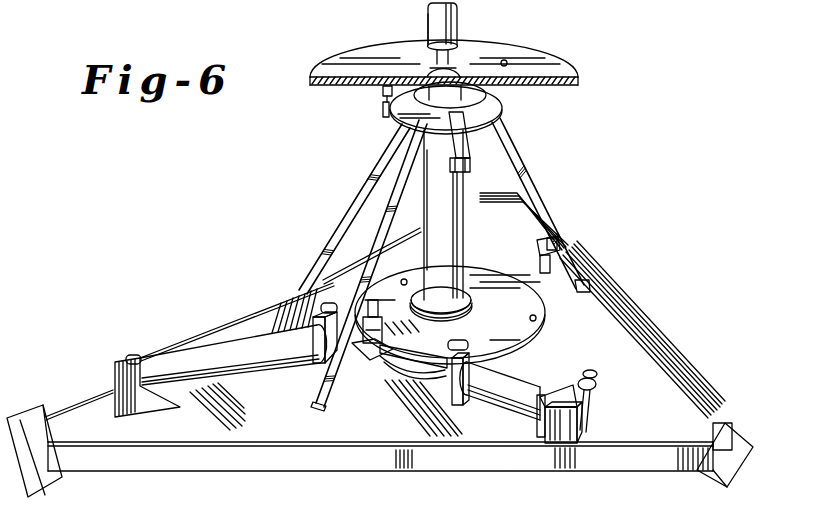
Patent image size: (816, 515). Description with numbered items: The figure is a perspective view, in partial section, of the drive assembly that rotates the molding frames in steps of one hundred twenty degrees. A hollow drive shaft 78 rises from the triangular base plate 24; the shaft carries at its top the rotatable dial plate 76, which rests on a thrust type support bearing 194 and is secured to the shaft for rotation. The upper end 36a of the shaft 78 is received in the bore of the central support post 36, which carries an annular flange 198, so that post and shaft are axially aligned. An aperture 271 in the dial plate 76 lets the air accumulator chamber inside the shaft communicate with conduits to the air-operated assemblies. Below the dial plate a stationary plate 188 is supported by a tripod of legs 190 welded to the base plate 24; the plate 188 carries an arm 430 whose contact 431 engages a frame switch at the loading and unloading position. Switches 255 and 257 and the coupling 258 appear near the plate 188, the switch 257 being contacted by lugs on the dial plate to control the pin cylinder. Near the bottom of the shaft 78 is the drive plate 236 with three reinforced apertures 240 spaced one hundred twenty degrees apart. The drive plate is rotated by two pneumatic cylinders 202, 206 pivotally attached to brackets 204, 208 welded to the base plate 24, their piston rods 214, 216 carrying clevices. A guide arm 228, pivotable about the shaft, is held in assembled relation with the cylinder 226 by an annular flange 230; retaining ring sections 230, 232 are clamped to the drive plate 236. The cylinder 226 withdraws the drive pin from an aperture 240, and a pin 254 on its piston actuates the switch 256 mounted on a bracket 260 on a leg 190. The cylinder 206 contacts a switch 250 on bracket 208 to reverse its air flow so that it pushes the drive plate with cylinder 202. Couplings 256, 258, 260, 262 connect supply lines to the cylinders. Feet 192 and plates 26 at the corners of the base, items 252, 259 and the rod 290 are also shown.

The base plate 24 is at (178, 462).
The corner plate 26 is at (32, 413).
The central support post 36 is at (458, 30).
The upper end of drive shaft 36a is at (480, 48).
The dial plate 76 is at (533, 62).
The drive shaft 78 is at (447, 245).
The stationary plate 188 is at (397, 123).
The legs 190 is at (351, 220).
The leg foot 192 is at (318, 406).
The thrust type support bearing 194 is at (405, 98).
The annular flange 198 is at (428, 43).
The pneumatic cylinder 202 is at (217, 357).
The bracket 204 is at (147, 400).
The pneumatic cylinder 206 is at (508, 380).
The bracket 208 is at (585, 425).
The piston rod 214 is at (367, 365).
The piston rod 216 is at (433, 370).
The cylinder 226 is at (383, 357).
The guide arm 228 is at (467, 337).
The annular flange / retaining ring section 230 is at (417, 310).
The retaining ring section 232 is at (580, 287).
The drive plate 236 is at (505, 281).
The reinforced apertures 240 is at (537, 316).
The switch 250 is at (590, 403).
The pin head 252 is at (585, 375).
The pin 254 is at (325, 289).
The bolt 255 is at (382, 92).
The switch 256 is at (553, 272).
The switch 257 is at (383, 107).
The coupling 258 is at (284, 321).
The fitting 259 is at (136, 354).
The bracket / coupling 260 is at (554, 243).
The coupling 262 is at (590, 373).
The aperture 271 is at (507, 62).
The rod 290 is at (424, 249).
The arm 430 is at (466, 152).
The contact 431 is at (452, 165).